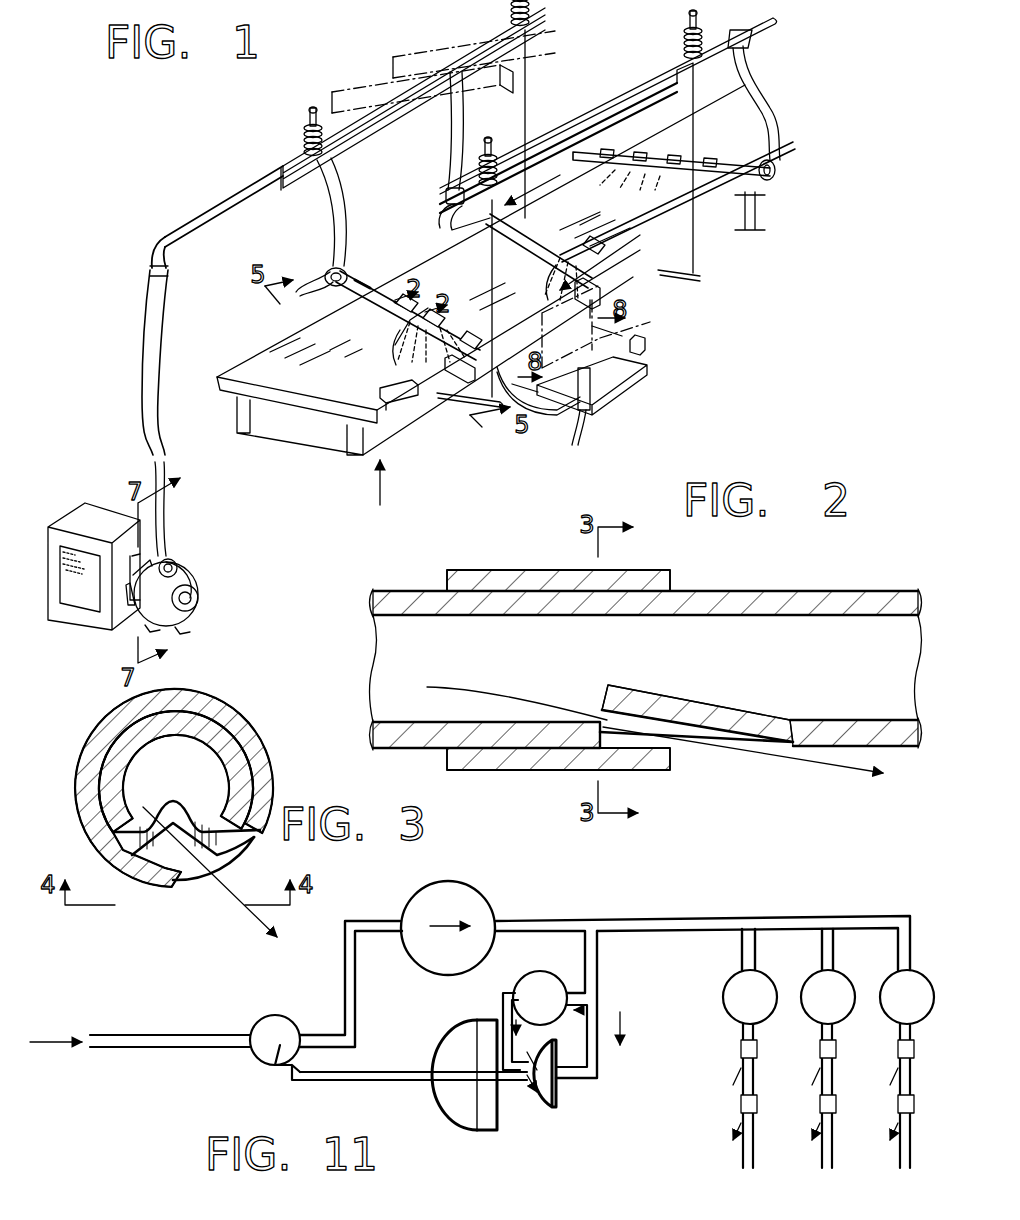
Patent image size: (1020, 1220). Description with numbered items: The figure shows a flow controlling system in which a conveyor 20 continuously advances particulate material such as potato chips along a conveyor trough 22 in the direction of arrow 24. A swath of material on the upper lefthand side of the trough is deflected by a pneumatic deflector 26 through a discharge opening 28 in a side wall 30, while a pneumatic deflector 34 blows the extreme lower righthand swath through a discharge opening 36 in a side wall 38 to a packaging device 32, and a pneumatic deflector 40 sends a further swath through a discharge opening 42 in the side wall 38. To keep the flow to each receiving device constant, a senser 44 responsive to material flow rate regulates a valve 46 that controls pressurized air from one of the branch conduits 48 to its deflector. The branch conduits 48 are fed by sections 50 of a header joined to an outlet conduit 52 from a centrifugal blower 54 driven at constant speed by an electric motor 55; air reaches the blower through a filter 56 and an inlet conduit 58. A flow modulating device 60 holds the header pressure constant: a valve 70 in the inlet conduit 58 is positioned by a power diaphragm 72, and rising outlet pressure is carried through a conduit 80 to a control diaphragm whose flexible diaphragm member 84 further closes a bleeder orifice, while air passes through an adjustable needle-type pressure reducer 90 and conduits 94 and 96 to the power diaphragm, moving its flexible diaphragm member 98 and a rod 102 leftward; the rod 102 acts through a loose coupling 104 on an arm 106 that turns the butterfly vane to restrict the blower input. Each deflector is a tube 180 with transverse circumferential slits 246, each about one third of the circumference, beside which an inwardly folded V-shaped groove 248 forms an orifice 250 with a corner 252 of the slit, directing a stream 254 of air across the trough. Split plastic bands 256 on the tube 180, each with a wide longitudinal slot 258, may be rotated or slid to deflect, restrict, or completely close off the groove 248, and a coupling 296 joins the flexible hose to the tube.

In FIG. 1, the conveyor 20 is at (380, 497).
In FIG. 1, the conveyor trough 22 is at (330, 395).
In FIG. 1, the arrow 24 is at (660, 248).
In FIG. 1, the pneumatic deflector 26 is at (700, 150).
In FIG. 1, the discharge opening 28 is at (556, 170).
In FIG. 1, the side wall 30 is at (430, 260).
In FIG. 1, the packaging device 32 is at (650, 345).
In FIG. 1, the pneumatic deflector 34 is at (625, 250).
In FIG. 1, the discharge opening 36 is at (555, 312).
In FIG. 1, the side wall 38 is at (395, 405).
In FIG. 1, the pneumatic deflector 40 is at (393, 330).
In FIG. 3, the pneumatic deflector 40 is at (243, 712).
In FIG. 2, the pneumatic deflector 40 is at (722, 585).
In FIG. 11, the pneumatic deflector 40 is at (838, 1140).
In FIG. 1, the discharge opening 42 is at (458, 380).
In FIG. 1, the senser 44 is at (618, 392).
In FIG. 1, the valve 46 is at (456, 196).
In FIG. 11, the valve 46 is at (765, 1018).
In FIG. 1, the branch conduits 48 is at (450, 150).
In FIG. 11, the branch conduits 48 is at (750, 950).
In FIG. 1, the header sections 50 is at (225, 222).
In FIG. 11, the header sections 50 is at (731, 928).
In FIG. 1, the outlet conduit 52 is at (146, 322).
In FIG. 11, the outlet conduit 52 is at (635, 930).
In FIG. 1, the blower 54 is at (193, 585).
In FIG. 11, the blower 54 is at (478, 902).
In FIG. 1, the electric motor 55 is at (210, 590).
In FIG. 1, the filter 56 is at (72, 616).
In FIG. 1, the inlet conduit 58 is at (132, 603).
In FIG. 11, the inlet conduit 58 is at (333, 1033).
In FIG. 1, the flow modulating device 60 is at (180, 553).
In FIG. 11, the flow modulating device 60 is at (532, 1130).
In FIG. 11, the valve 70 is at (250, 1018).
In FIG. 11, the power diaphragm 72 is at (492, 1111).
In FIG. 11, the conduit 80 is at (590, 1080).
In FIG. 11, the flexible diaphragm member 84 is at (546, 1108).
In FIG. 11, the pressure reducer 90 is at (548, 985).
In FIG. 11, the conduit 94 is at (503, 1010).
In FIG. 11, the conduit 96 is at (508, 1090).
In FIG. 11, the flexible diaphragm member 98 is at (440, 1108).
In FIG. 11, the rod 102 is at (380, 1072).
In FIG. 11, the loose coupling 104 is at (290, 1082).
In FIG. 11, the arm 106 is at (283, 1065).
In FIG. 1, the tube 180 is at (365, 280).
In FIG. 3, the tube 180 is at (238, 774).
In FIG. 2, the tube 180 is at (825, 600).
In FIG. 11, the tube 180 is at (753, 1155).
In FIG. 3, the transverse circumferential slits 246 is at (226, 843).
In FIG. 2, the transverse circumferential slits 246 is at (642, 748).
In FIG. 3, the groove 248 is at (178, 806).
In FIG. 2, the groove 248 is at (683, 716).
In FIG. 2, the orifice 250 is at (602, 718).
In FIG. 2, the corner 252 is at (610, 712).
In FIG. 2, the stream 254 is at (808, 760).
In FIG. 1, the bands 256 is at (430, 345).
In FIG. 3, the bands 256 is at (262, 795).
In FIG. 2, the bands 256 is at (510, 578).
In FIG. 3, the slot 258 is at (183, 883).
In FIG. 1, the hose coupling 296 is at (442, 212).